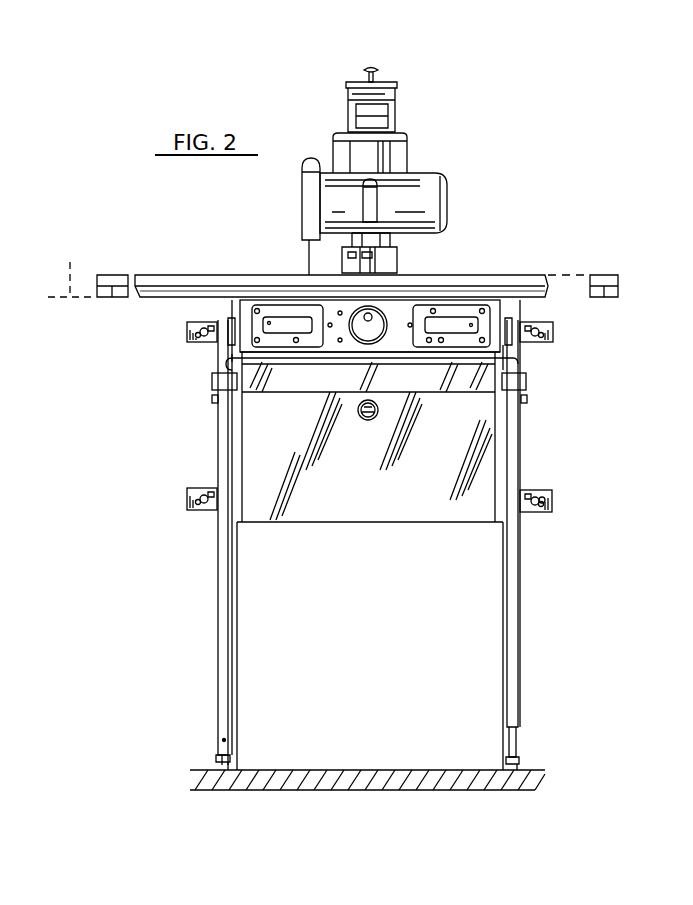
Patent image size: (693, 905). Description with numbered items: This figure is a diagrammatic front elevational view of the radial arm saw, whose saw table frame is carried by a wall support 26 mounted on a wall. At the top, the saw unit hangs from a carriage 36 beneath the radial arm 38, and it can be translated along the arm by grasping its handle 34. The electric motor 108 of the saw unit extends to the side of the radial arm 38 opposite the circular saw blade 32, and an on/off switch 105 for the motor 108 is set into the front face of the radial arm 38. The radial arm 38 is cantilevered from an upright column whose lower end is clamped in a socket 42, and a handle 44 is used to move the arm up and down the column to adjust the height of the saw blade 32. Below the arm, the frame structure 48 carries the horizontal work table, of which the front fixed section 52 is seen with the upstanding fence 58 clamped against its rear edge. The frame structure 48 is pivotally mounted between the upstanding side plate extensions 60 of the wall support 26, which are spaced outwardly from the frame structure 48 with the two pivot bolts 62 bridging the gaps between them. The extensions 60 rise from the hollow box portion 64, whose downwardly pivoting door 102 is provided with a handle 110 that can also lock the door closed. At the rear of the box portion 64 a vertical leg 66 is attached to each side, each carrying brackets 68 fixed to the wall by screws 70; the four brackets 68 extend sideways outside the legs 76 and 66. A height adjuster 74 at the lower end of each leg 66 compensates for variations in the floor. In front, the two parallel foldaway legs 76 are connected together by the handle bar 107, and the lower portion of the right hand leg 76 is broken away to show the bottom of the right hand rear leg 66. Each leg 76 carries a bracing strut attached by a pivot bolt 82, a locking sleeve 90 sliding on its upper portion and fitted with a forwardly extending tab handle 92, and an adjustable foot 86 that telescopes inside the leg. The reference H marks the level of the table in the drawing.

The wall support 26 is at (178, 470).
The circular saw blade 32 is at (306, 258).
The handle 34 is at (370, 203).
The carriage 36 is at (408, 156).
The radial arm 38 is at (396, 104).
The socket 42 is at (400, 268).
The handle 44 is at (365, 70).
The frame structure 48 is at (400, 322).
The front fixed section 52 is at (220, 275).
The fence 58 is at (190, 275).
The side plate extensions 60 is at (217, 343).
The bolts 62 is at (215, 295).
The box portion 64 is at (542, 446).
The leg 66 is at (232, 700).
The brackets 68 is at (187, 328).
The screws 70 is at (548, 500).
The height adjuster 74 is at (512, 770).
The foldaway legs 76 is at (222, 650).
The pivot bolt 82 is at (212, 400).
The adjustable foot 86 is at (218, 765).
The locking sleeve 90 is at (210, 378).
The tab handle 92 is at (528, 368).
The door 102 is at (423, 503).
The on/off switch 105 is at (388, 125).
The handle bar 107 is at (347, 362).
The electric motor 108 is at (448, 212).
The handle 110 is at (370, 424).
The height datum H is at (72, 266).